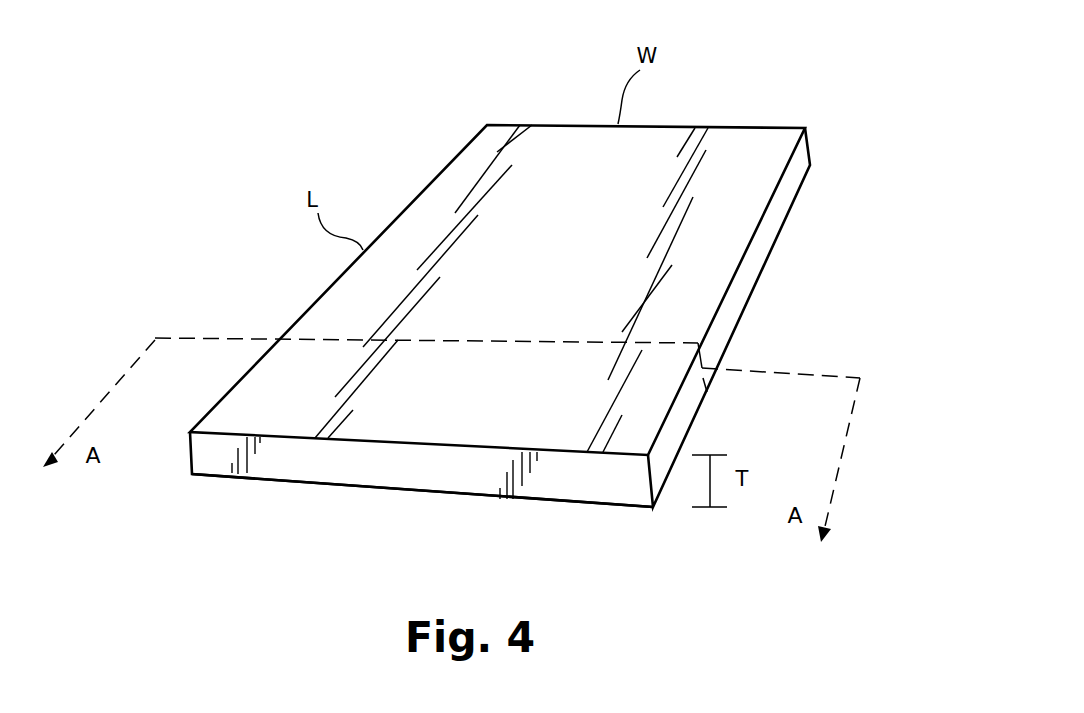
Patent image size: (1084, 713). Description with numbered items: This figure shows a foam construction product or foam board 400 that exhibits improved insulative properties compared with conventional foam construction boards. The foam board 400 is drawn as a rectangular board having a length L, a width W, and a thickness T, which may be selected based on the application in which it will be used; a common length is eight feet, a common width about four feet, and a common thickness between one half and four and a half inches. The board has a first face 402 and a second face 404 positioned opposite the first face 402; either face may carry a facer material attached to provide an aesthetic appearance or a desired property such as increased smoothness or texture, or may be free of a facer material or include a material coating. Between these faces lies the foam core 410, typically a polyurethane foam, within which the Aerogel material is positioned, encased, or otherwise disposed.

The foam board 400 is at (826, 94).
The first face 402 is at (468, 178).
The second face 404 is at (612, 509).
The foam core 410 is at (267, 463).